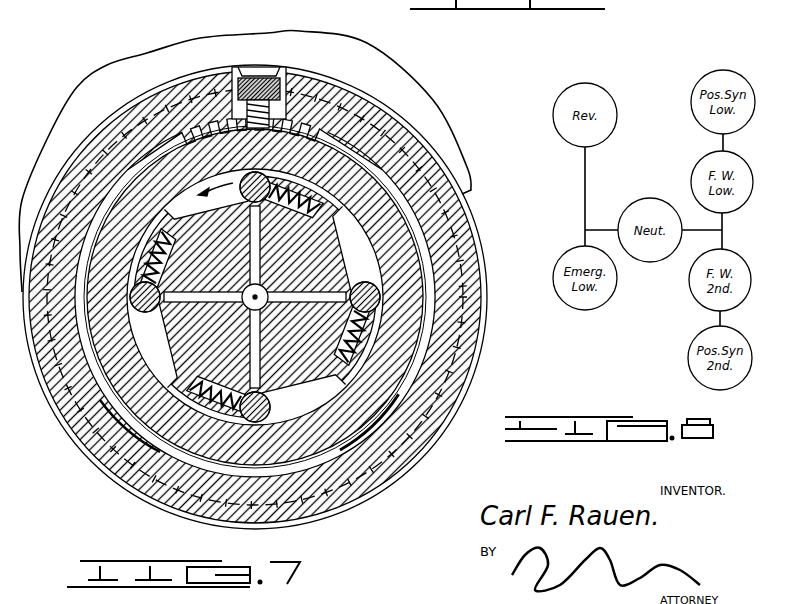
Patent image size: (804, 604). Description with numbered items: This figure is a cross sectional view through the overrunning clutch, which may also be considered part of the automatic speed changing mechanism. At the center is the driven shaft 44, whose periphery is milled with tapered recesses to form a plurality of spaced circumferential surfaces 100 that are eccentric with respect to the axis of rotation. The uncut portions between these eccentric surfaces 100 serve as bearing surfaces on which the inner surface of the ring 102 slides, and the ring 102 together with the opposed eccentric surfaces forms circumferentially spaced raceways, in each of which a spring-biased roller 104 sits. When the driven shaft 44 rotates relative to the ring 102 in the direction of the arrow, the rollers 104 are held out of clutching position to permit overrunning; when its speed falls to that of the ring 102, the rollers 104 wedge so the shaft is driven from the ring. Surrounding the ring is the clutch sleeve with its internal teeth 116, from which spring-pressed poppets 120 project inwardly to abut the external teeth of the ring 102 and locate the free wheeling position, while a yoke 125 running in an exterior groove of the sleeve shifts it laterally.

The yoke 125 is at (118, 76).
The ring 102 is at (188, 167).
The spring-pressed poppets 120 is at (296, 82).
The internal set of teeth 116 is at (317, 134).
The eccentric circumferential surfaces 100 is at (423, 254).
The spring-biased roller 104 is at (390, 314).
The driven shaft 44 is at (350, 381).